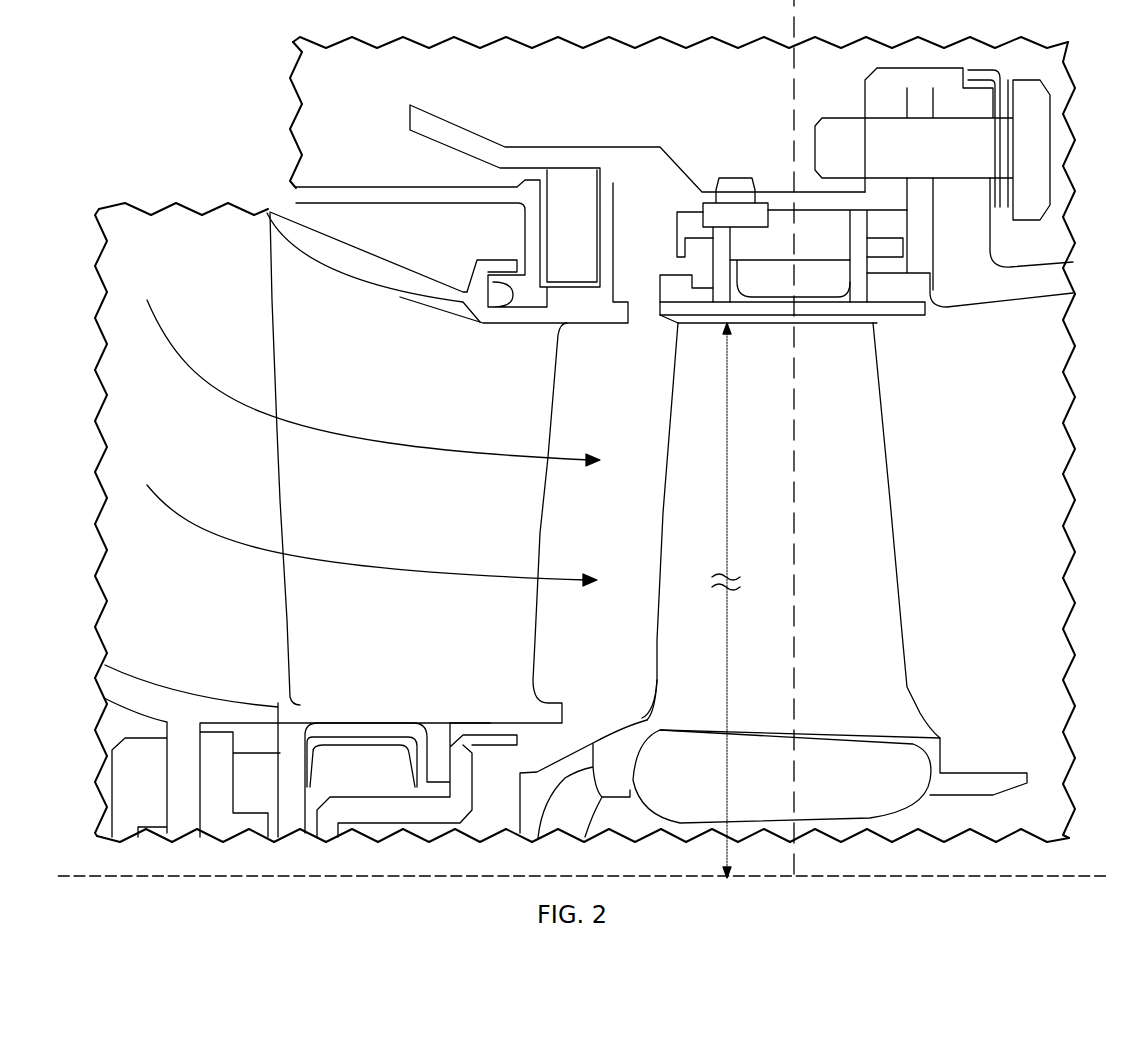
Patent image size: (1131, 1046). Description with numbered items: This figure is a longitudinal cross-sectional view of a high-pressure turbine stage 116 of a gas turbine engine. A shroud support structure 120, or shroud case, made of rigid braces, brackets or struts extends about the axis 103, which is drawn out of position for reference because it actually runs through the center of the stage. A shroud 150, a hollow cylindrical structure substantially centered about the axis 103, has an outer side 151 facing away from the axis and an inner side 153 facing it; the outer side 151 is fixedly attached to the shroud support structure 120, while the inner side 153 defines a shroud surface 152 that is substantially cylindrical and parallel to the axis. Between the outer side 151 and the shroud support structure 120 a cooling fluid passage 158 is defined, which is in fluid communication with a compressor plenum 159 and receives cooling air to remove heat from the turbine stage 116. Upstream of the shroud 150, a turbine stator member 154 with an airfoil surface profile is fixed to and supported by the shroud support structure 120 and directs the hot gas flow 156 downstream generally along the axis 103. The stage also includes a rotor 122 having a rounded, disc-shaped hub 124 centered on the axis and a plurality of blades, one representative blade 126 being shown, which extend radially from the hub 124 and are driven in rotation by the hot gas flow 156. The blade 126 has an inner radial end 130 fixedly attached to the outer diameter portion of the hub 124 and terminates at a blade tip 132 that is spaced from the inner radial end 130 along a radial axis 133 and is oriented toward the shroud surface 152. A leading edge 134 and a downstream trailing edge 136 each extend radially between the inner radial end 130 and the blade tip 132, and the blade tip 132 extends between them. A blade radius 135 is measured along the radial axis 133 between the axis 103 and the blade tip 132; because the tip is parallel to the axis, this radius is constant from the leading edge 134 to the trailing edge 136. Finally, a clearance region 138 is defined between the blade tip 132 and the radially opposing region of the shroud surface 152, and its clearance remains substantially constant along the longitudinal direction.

The axis 103 is at (1048, 875).
The high-pressure turbine stage 116 is at (228, 93).
The shroud support structure 120 is at (775, 196).
The rotor 122 is at (773, 746).
The hub 124 is at (900, 815).
The blade 126 is at (782, 530).
The inner radial end 130 is at (658, 690).
The blade tip 132 is at (748, 320).
The radial axis 133 is at (797, 634).
The leading edge 134 is at (660, 528).
The blade radius 135 is at (730, 512).
The trailing edge 136 is at (903, 600).
The clearance region 138 is at (672, 322).
The shroud 150 is at (913, 318).
The outer side 151 is at (868, 245).
The shroud surface 152 is at (815, 322).
The inner side 153 is at (660, 300).
The turbine stator member 154 is at (300, 490).
The hot gas flow 156 is at (472, 453).
The cooling fluid passage 158 is at (845, 250).
The compressor plenum 159 is at (505, 62).